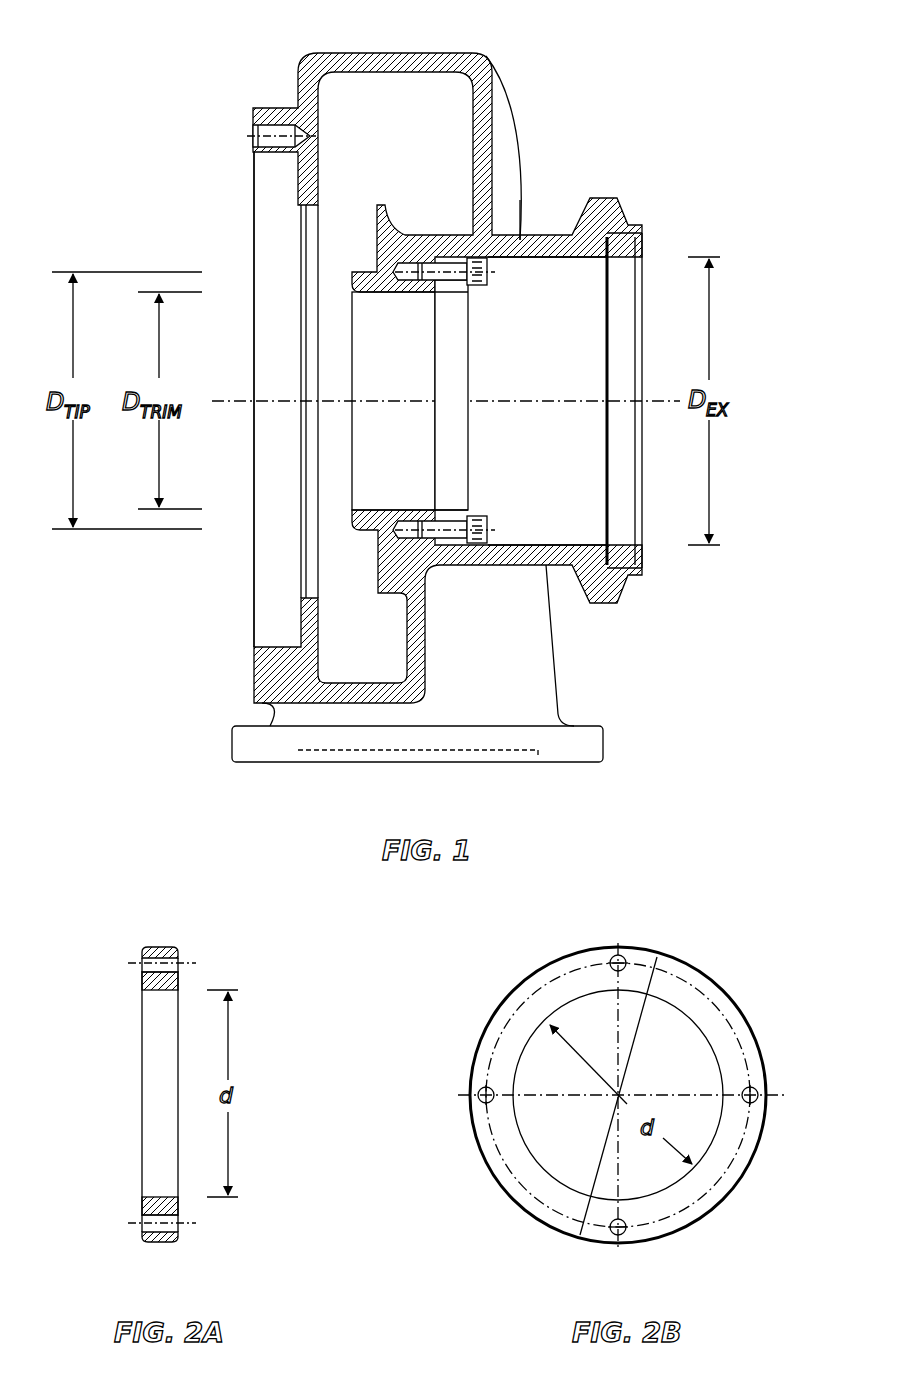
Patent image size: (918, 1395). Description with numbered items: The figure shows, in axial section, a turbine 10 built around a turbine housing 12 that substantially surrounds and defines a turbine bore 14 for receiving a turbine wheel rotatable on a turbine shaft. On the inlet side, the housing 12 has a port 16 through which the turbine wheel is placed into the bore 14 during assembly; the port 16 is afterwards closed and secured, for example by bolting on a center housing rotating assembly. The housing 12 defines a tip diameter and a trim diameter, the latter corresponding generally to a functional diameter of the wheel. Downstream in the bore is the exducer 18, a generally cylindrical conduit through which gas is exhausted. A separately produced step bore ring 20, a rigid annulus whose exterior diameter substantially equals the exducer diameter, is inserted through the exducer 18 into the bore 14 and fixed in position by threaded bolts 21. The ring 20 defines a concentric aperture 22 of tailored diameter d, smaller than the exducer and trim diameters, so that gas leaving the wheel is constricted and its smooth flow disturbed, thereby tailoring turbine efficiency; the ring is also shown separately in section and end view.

In FIG. 1, the turbine 10 is at (568, 30).
In FIG. 1, the turbine housing 12 is at (462, 56).
In FIG. 1, the turbine bore 14 is at (372, 383).
In FIG. 1, the port 16 is at (272, 225).
In FIG. 1, the exducer 18 is at (572, 463).
In FIG. 1, the step bore ring 20 is at (460, 290).
In FIG. 2A, the step bore ring 20 is at (142, 952).
In FIG. 2B, the step bore ring 20 is at (742, 1120).
In FIG. 1, the threaded bolts 21 is at (483, 520).
In FIG. 1, the aperture 22 is at (451, 395).
In FIG. 2A, the aperture 22 is at (150, 1017).
In FIG. 2B, the aperture 22 is at (695, 1147).